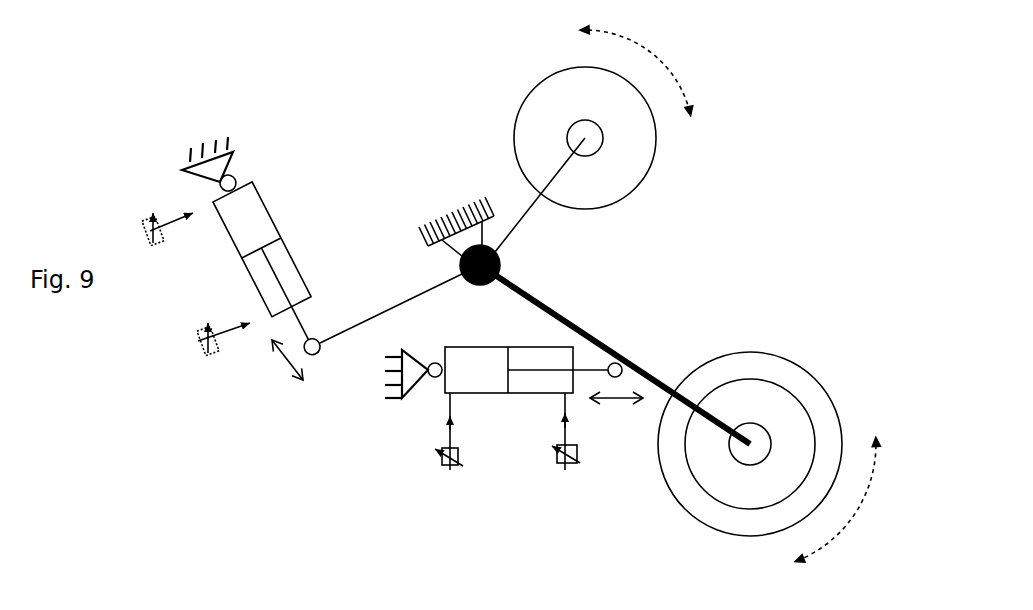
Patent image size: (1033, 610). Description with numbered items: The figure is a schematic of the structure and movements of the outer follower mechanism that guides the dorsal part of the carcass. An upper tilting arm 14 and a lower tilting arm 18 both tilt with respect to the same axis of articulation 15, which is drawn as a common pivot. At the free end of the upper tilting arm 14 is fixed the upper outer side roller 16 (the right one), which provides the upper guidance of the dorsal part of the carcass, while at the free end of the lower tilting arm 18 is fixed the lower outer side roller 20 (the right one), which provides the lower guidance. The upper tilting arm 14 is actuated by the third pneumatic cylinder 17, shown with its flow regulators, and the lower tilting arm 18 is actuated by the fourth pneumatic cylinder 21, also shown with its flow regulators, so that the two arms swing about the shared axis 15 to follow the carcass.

The upper tilting arm 14 is at (528, 215).
The axis of articulation 15 is at (502, 263).
The upper outer side roller 16 is at (658, 142).
The third pneumatic cylinder 17 is at (270, 212).
The lower tilting arm 18 is at (593, 335).
The lower outer side roller 20 is at (815, 370).
The fourth pneumatic cylinder 21 is at (508, 398).